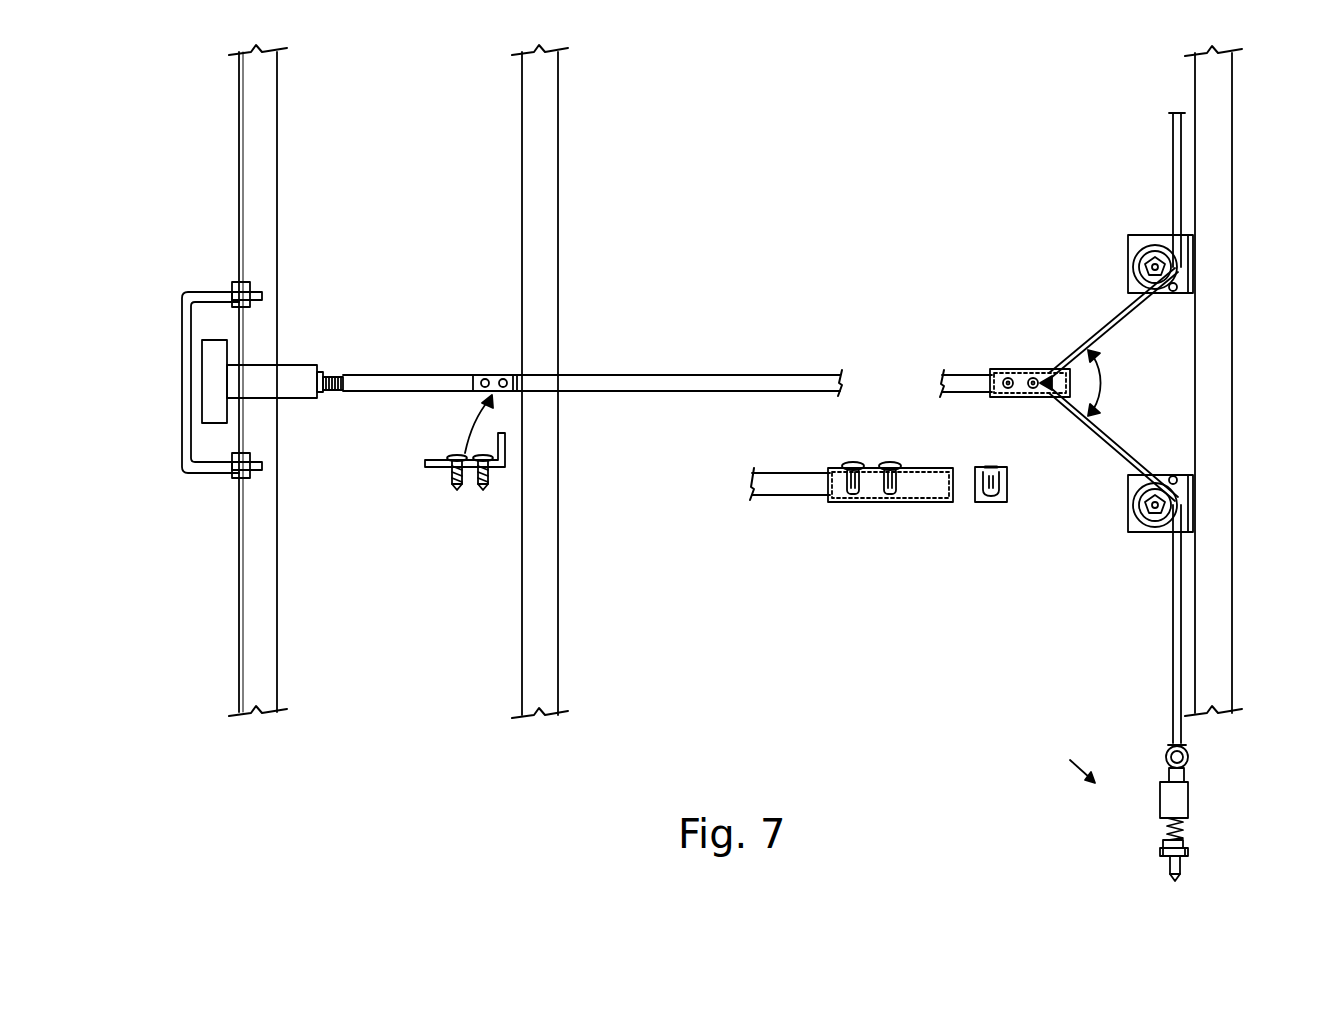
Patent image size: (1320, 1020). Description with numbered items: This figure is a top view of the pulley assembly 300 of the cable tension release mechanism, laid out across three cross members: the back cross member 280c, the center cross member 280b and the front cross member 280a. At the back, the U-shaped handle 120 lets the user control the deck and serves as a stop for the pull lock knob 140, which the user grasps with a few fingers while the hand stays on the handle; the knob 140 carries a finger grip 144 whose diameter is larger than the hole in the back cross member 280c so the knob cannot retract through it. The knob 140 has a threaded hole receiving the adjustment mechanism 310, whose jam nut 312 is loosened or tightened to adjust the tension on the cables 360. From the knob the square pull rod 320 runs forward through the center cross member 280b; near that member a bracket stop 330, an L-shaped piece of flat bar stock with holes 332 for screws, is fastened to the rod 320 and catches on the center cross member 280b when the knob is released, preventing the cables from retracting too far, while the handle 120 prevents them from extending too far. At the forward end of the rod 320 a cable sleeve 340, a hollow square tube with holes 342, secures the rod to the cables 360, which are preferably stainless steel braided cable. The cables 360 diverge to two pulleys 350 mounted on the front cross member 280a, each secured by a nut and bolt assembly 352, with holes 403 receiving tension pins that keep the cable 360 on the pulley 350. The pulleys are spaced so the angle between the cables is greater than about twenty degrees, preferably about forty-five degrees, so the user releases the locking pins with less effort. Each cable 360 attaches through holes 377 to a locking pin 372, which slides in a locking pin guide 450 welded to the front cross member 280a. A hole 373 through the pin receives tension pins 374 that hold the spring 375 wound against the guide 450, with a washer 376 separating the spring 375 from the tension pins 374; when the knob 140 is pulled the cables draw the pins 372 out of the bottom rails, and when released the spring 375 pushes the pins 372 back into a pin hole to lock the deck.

The U-shaped handle 120 is at (186, 293).
The pull lock knob 140 is at (215, 353).
The finger grip 144 is at (215, 410).
The front cross member 280a is at (1232, 128).
The center cross member 280b is at (545, 132).
The back cross member 280c is at (277, 152).
The pulley assembly 300 is at (806, 190).
The adjustment mechanism 310 is at (338, 356).
The jam nut 312 is at (334, 392).
The square pull rod 320 is at (616, 392).
The bracket stop 330 is at (490, 377).
The holes 332 is at (483, 377).
The cable sleeve 340 is at (1018, 368).
The holes 342 is at (950, 455).
The pulley 350 is at (1155, 244).
The nut and bolt assembly 352 is at (1146, 266).
The cables 360 is at (1096, 336).
The holes 403 is at (1173, 293).
The locking pin guide 450 is at (1160, 800).
The locking pin 372 is at (1174, 879).
The hole 373 is at (1170, 864).
The tension pins 374 is at (1190, 852).
The spring 375 is at (1166, 832).
The washer 376 is at (1184, 843).
The holes 377 is at (1188, 762).